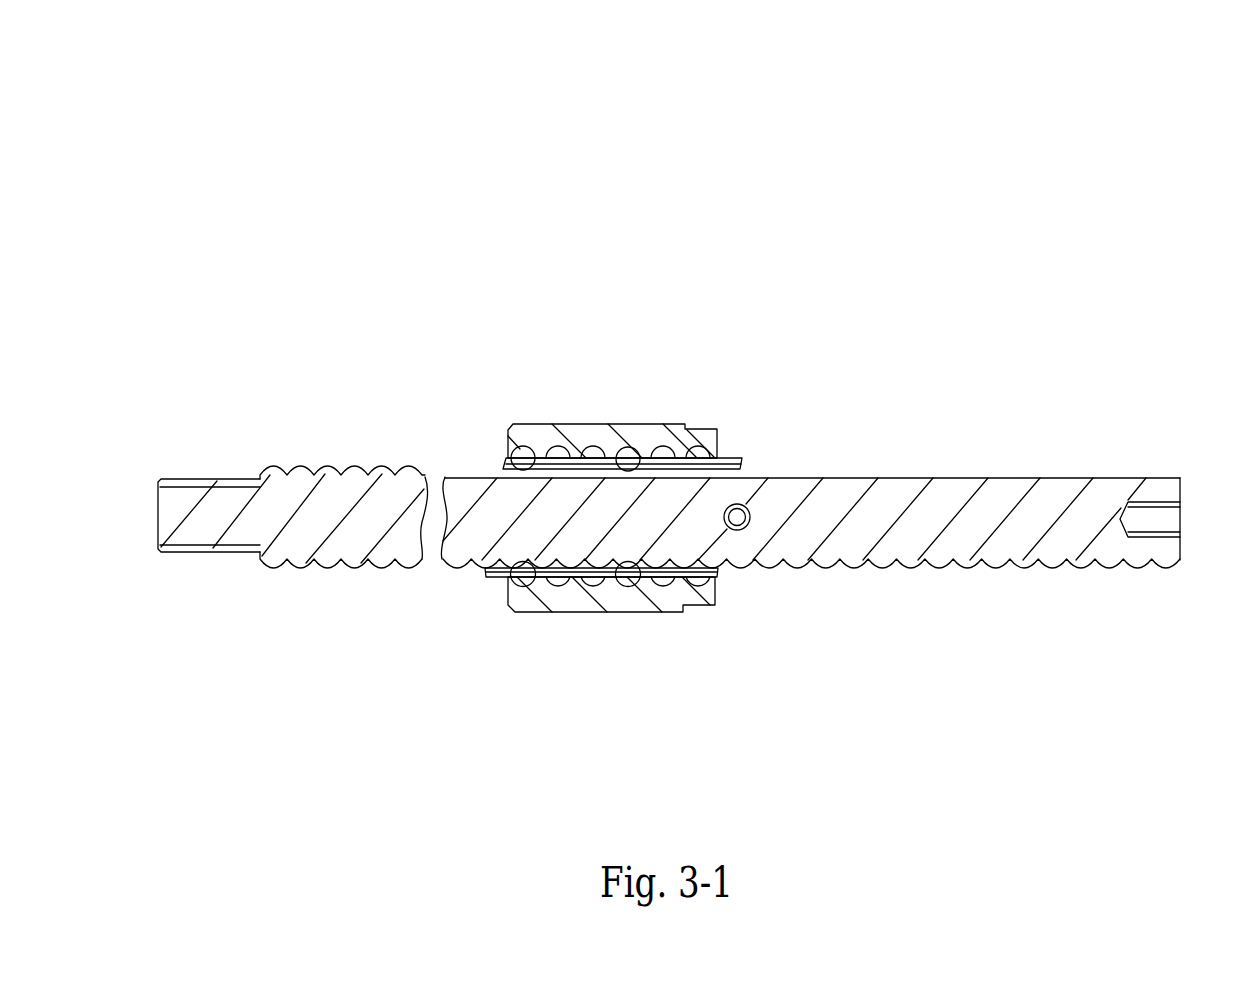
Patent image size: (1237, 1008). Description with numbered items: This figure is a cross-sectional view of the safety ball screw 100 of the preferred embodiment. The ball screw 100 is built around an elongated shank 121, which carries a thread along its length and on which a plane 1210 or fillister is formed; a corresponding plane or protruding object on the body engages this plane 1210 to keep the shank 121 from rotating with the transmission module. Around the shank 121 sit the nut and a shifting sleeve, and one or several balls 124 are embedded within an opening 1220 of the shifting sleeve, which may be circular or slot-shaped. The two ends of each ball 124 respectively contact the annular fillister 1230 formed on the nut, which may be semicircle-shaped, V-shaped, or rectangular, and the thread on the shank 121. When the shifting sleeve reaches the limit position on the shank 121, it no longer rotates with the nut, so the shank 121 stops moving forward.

The ball screw 100 is at (353, 200).
The shank 121 is at (1158, 488).
The plane 1210 is at (900, 478).
The opening 1220 is at (632, 460).
The annular fillister 1230 is at (595, 447).
The ball 124 is at (627, 582).